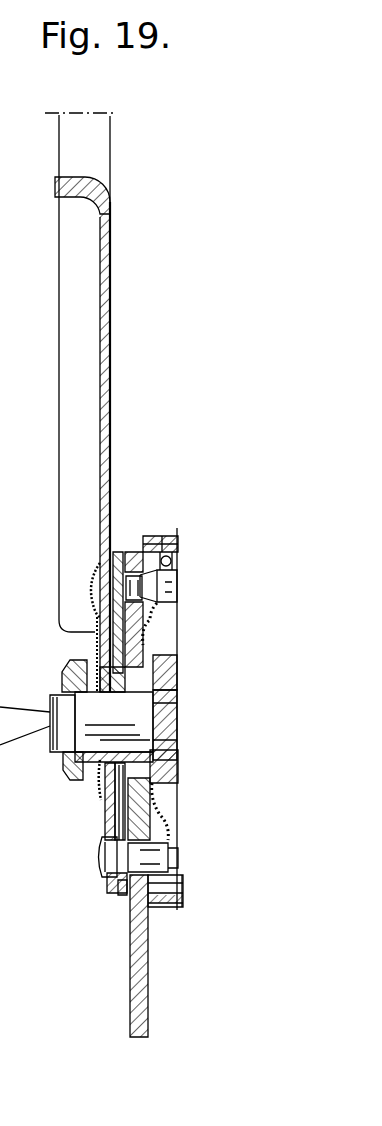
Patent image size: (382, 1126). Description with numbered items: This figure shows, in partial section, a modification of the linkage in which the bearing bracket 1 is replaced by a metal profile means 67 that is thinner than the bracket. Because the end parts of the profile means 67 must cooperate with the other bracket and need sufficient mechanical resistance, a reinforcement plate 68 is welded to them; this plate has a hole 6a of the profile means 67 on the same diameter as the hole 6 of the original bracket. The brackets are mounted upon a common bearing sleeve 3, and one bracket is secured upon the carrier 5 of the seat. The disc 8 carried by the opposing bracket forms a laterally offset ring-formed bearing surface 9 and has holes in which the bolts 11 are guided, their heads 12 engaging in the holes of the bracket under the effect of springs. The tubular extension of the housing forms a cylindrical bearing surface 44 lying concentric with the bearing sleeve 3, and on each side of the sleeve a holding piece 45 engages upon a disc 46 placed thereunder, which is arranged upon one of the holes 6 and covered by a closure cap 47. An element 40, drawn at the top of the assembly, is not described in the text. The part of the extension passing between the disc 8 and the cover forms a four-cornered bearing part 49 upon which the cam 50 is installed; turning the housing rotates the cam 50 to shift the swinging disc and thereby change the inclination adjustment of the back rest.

The bearing bracket 1 is at (96, 402).
The metal profile means 67 is at (109, 251).
The plate 68 is at (118, 552).
The cap 40 is at (162, 536).
The bearing surface 9 is at (178, 556).
The bolt 11 is at (172, 590).
The head 12 is at (130, 588).
The closure cap 47 is at (93, 583).
The disc 8 is at (157, 642).
The holding piece 45 is at (70, 666).
The cam 50 is at (178, 670).
The bearing part 49 is at (172, 712).
The bearing surface 44 is at (57, 746).
The carrier 5 is at (25, 706).
The bearing sleeve 3 is at (70, 782).
The disc 46 is at (100, 790).
The hole 6 is at (110, 887).
The hole 6a is at (122, 897).